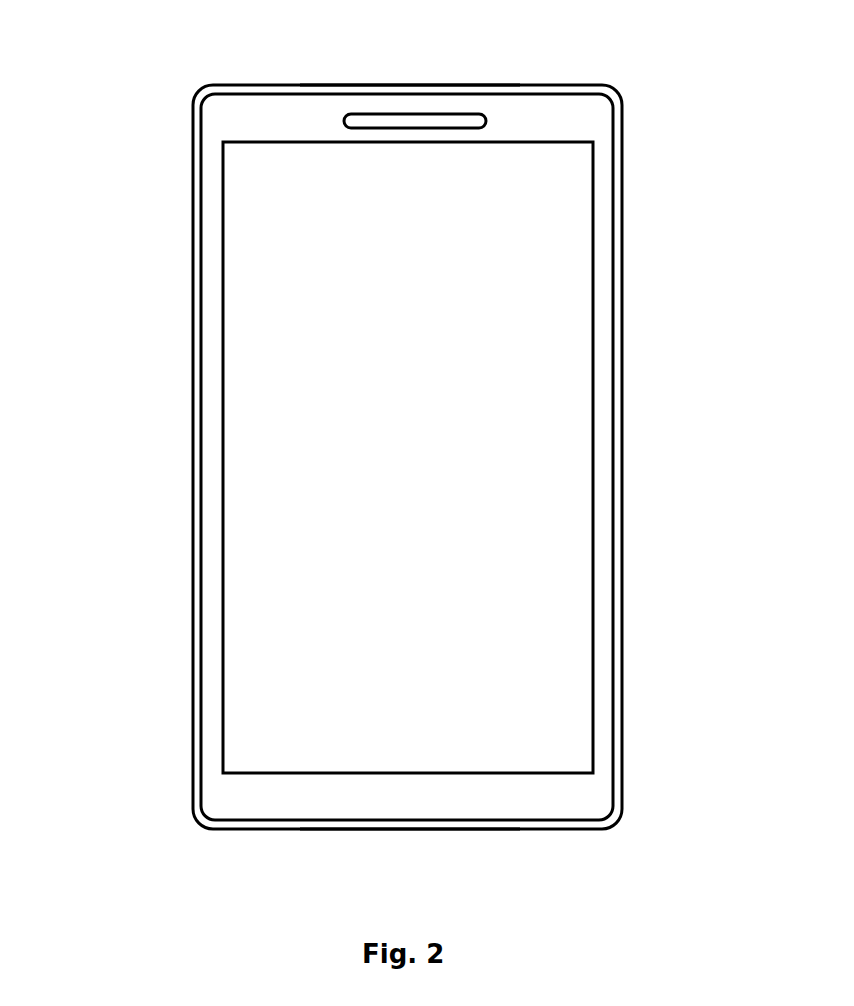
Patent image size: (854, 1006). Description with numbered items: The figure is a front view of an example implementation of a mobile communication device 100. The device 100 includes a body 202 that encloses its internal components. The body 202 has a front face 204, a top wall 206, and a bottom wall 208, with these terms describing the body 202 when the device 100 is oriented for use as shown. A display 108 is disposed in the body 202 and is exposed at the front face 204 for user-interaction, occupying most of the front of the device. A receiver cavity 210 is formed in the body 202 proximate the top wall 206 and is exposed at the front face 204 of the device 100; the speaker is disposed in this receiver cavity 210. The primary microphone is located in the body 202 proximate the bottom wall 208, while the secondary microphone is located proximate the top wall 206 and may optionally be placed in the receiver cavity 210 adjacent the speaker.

The device 100 is at (138, 58).
The display 108 is at (433, 458).
The body 202 is at (623, 160).
The front face 204 is at (593, 402).
The top wall 206 is at (405, 85).
The bottom wall 208 is at (400, 829).
The receiver cavity 210 is at (447, 114).